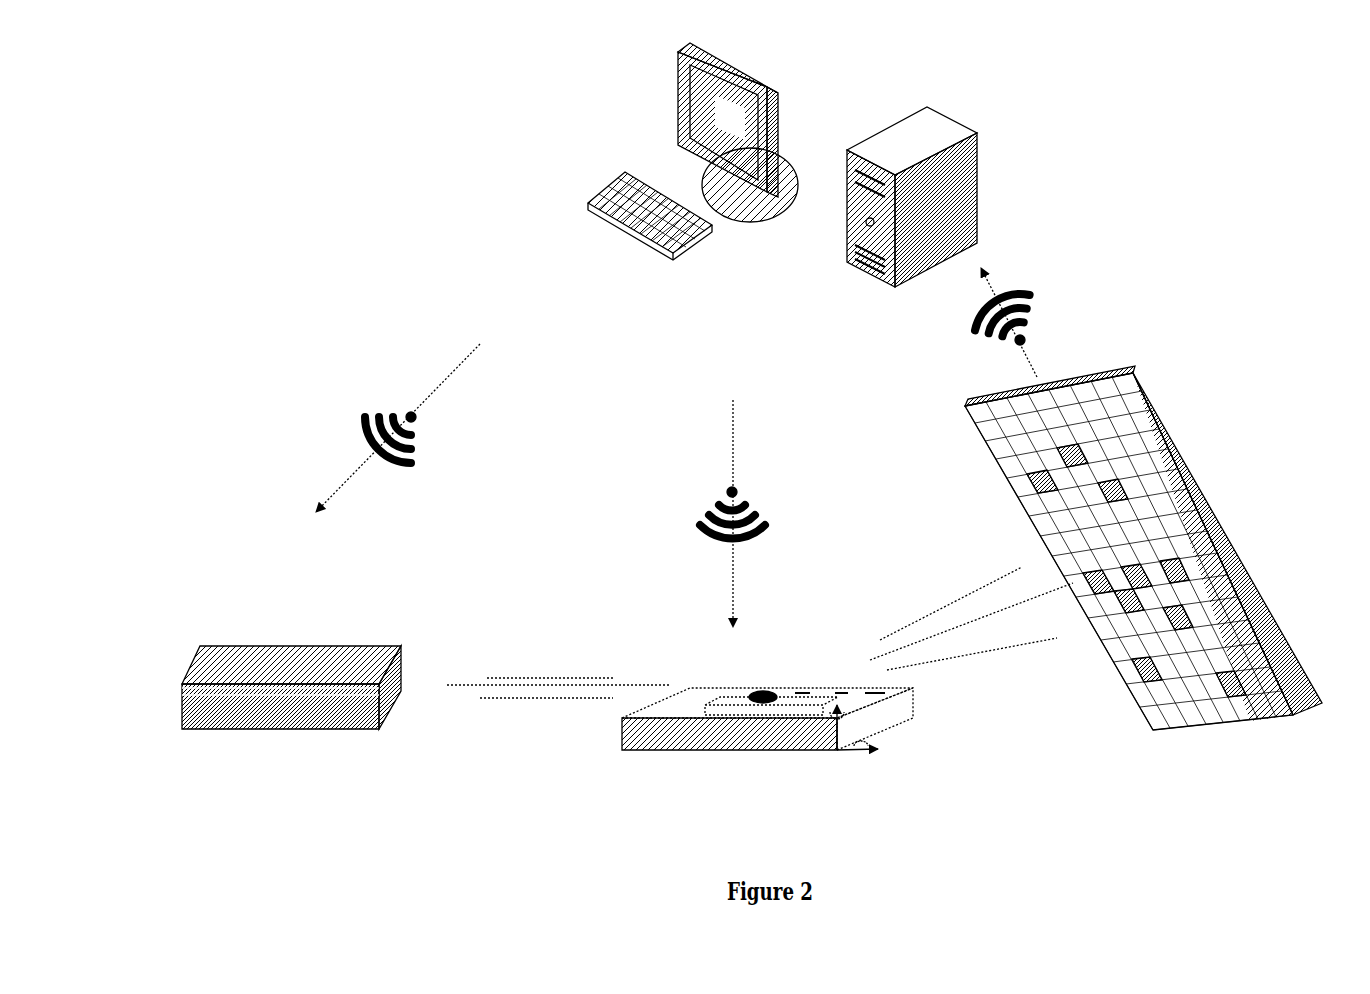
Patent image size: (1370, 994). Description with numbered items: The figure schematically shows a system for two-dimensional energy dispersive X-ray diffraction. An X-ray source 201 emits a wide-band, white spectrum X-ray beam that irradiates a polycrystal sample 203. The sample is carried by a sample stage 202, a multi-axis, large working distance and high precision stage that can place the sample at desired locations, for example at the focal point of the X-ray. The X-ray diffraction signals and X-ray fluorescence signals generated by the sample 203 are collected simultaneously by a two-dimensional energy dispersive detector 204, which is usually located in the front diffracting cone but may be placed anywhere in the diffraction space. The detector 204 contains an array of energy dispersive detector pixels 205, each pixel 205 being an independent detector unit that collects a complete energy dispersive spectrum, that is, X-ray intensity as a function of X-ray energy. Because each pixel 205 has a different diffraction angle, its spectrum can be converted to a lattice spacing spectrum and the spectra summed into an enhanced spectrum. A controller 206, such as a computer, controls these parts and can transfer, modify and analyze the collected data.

The X-ray source 201 is at (285, 727).
The sample stage 202 is at (753, 747).
The polycrystal sample 203 is at (760, 690).
The two-dimensional energy dispersive detector 204 is at (1189, 735).
The energy dispersive detector pixel 205 is at (1120, 482).
The controller 206 is at (727, 165).